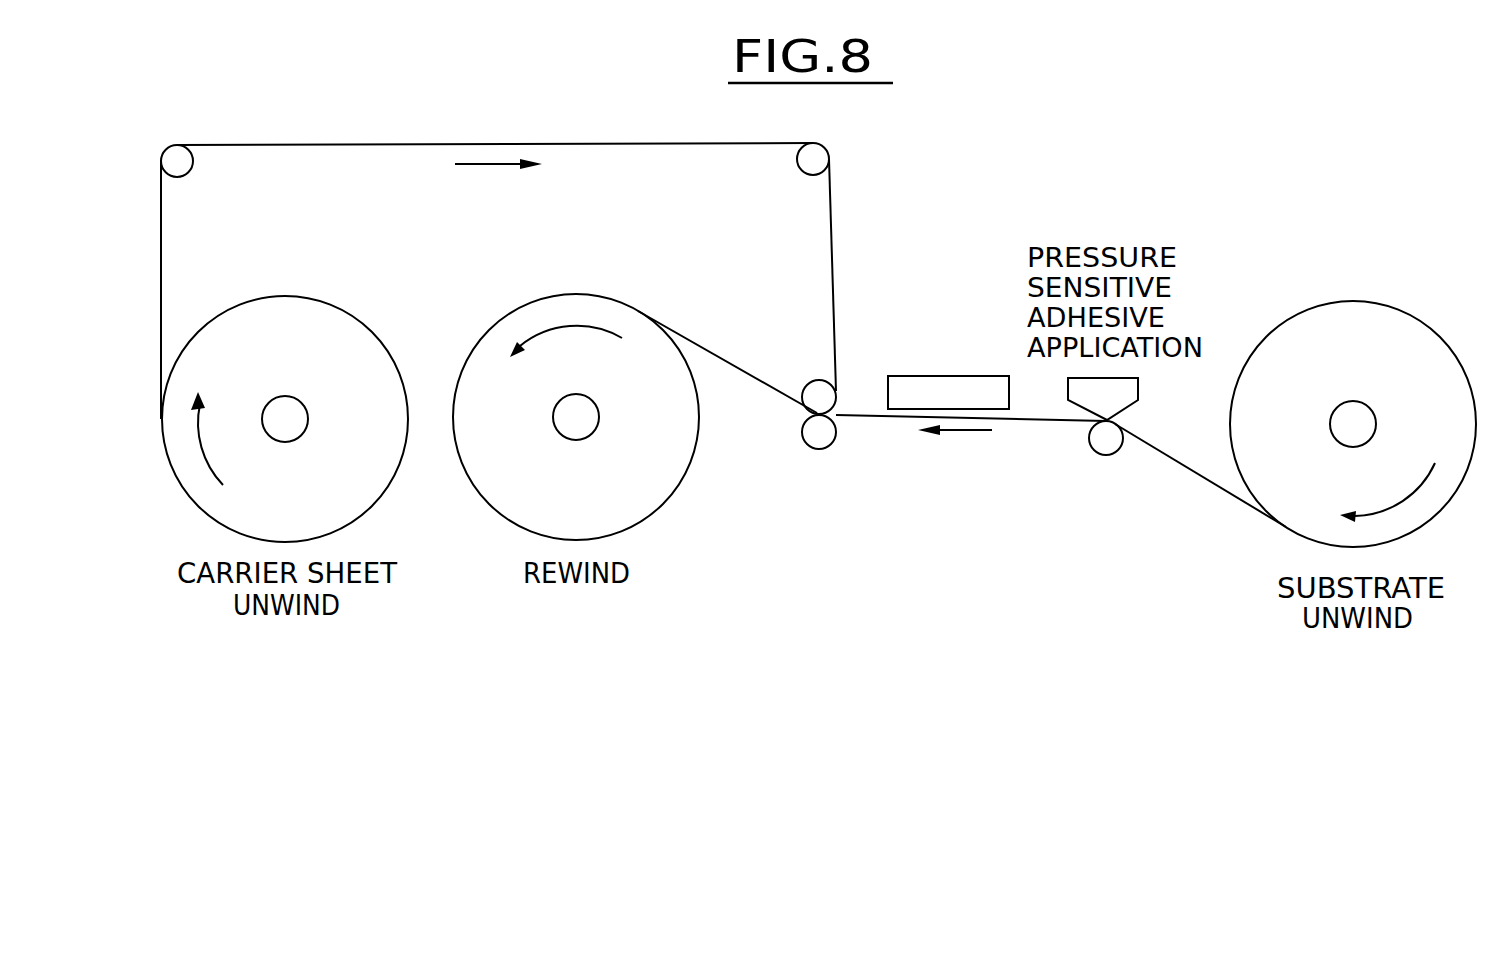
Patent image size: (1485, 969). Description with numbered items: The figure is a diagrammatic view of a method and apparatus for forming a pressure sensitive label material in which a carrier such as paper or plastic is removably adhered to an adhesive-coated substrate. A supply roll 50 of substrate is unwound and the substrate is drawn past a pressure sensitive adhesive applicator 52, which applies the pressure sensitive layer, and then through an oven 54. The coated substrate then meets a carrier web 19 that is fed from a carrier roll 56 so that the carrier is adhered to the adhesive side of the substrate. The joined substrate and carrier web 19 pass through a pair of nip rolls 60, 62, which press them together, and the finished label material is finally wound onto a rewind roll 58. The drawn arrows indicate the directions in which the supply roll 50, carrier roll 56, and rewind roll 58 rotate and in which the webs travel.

The carrier web 19 is at (508, 143).
The supply roll 50 is at (1358, 300).
The pressure sensitive adhesive applicator 52 is at (1093, 402).
The oven 54 is at (918, 375).
The carrier roll 56 is at (350, 314).
The rewind roll 58 is at (693, 462).
The nip roll 60 is at (808, 383).
The nip roll 62 is at (832, 445).